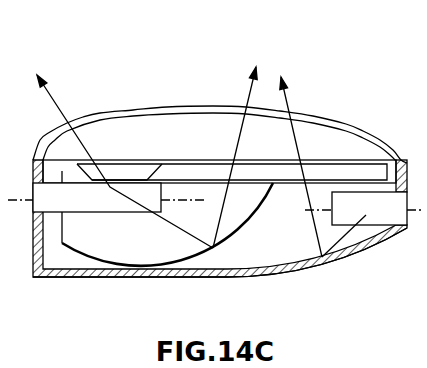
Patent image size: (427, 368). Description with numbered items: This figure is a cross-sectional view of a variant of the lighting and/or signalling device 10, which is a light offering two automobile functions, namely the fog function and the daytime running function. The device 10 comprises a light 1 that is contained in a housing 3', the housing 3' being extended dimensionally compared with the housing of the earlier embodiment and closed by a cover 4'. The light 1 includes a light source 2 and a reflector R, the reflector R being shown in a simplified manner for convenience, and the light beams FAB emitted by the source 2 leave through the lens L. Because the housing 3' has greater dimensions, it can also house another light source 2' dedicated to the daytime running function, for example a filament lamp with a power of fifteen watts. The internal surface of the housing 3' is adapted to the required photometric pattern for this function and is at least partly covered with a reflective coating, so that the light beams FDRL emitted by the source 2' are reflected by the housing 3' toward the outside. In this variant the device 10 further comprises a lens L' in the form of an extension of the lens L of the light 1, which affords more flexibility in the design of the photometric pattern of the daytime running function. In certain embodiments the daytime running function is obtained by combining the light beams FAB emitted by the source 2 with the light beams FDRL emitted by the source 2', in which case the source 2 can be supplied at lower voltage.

The lighting and/or signalling device 10 is at (215, 175).
The light 1 is at (137, 248).
The light source 2 is at (97, 207).
The light source 2' is at (350, 221).
The housing 3' is at (220, 269).
The cover 4' is at (220, 122).
The lens L is at (219, 162).
The lens L' is at (232, 160).
The reflector R is at (226, 235).
The light beams FAB is at (252, 82).
The light beams FDRL is at (323, 156).